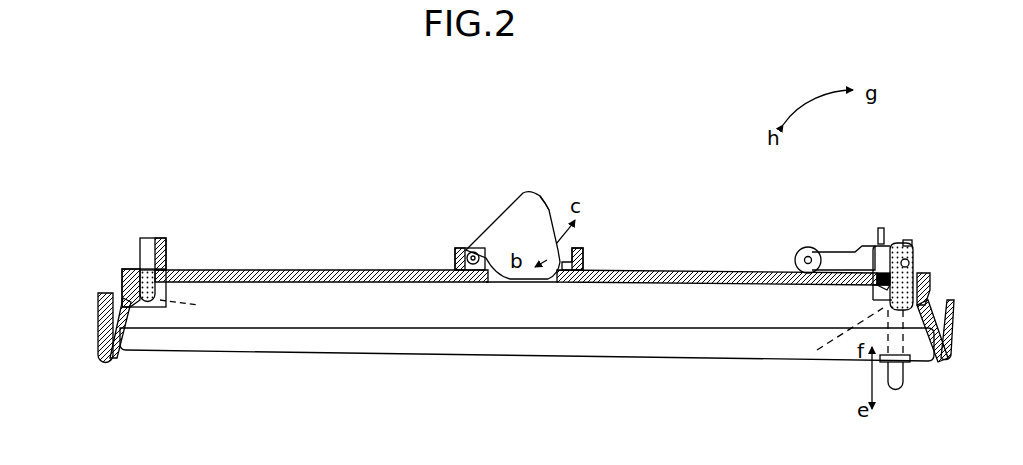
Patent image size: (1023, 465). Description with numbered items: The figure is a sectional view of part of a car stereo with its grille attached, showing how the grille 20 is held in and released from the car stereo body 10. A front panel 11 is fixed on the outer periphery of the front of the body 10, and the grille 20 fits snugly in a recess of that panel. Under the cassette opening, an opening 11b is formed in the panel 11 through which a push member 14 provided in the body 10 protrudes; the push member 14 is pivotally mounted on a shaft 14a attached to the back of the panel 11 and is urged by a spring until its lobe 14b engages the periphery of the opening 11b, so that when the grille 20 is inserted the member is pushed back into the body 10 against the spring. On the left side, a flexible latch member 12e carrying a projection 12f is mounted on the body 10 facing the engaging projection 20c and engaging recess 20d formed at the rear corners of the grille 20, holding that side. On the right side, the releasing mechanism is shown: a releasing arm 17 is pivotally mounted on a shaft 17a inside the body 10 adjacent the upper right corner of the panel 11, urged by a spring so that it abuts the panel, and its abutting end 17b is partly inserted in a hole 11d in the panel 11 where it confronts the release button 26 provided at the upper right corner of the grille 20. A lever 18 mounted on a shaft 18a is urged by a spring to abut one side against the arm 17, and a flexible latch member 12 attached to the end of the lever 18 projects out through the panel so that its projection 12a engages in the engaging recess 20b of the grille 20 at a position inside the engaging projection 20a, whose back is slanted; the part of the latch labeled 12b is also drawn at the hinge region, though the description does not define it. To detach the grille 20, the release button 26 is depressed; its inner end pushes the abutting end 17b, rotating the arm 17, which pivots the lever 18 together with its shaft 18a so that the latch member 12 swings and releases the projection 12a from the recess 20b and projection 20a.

The car stereo body 10 is at (666, 236).
The front panel 11 is at (98, 328).
The opening 11b is at (490, 284).
The hole 11d is at (880, 284).
The flexible latch member 12 is at (917, 262).
The projection 12a is at (818, 350).
The hinge pin 12b is at (900, 243).
The flexible latch member 12e is at (148, 253).
The projection 12f is at (199, 311).
The push member 14 is at (503, 221).
The shaft 14a is at (473, 252).
The lobe 14b is at (547, 203).
The releasing arm 17 is at (836, 268).
The shaft 17a is at (806, 248).
The abutting end 17b is at (887, 287).
The lever 18 is at (875, 247).
The shaft 18a is at (908, 240).
The grille 20 is at (482, 365).
The engaging projection 20a is at (930, 275).
The engaging recess 20b is at (940, 298).
The engaging projection 20c is at (130, 280).
The engaging recess 20d is at (127, 300).
The release button 26 is at (897, 390).